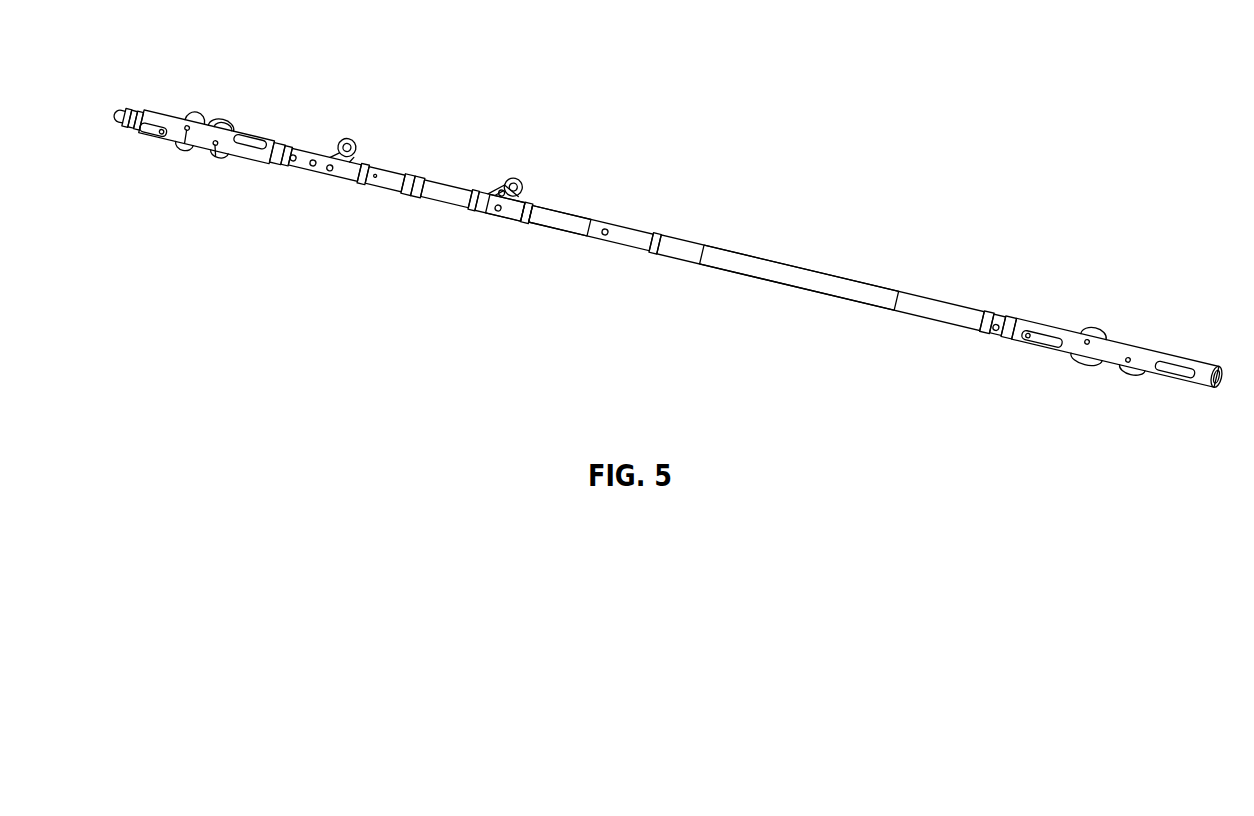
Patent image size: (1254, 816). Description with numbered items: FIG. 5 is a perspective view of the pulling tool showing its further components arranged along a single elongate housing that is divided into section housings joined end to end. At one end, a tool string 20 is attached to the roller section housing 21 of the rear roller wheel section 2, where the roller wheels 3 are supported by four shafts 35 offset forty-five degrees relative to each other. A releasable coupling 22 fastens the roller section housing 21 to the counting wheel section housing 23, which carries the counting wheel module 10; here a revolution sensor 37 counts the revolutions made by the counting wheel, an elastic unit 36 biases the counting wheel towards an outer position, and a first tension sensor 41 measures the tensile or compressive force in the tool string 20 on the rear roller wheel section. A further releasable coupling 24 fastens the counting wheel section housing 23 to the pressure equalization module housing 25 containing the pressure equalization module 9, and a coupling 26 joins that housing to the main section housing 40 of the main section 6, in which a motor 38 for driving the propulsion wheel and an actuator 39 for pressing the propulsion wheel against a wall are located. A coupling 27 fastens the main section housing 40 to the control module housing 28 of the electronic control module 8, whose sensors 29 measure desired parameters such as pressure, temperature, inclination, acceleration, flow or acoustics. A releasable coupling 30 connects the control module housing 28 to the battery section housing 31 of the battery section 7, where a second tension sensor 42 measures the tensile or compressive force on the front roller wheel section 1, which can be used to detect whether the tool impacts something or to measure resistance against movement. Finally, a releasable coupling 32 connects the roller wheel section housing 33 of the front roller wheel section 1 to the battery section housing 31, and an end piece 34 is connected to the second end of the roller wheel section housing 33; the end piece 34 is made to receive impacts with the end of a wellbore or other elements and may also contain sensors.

The first (front) roller wheel section 1 is at (1113, 350).
The second (rear) roller wheel section 2 is at (209, 122).
The roller wheels 3 is at (193, 116).
The main section 6 is at (482, 208).
The battery section 7 is at (827, 283).
The electronic control module 8 is at (630, 237).
The pressure equalization module 9 is at (380, 187).
The counting wheel module 10 is at (345, 173).
The tool string 20 is at (123, 128).
The roller section housing 21 is at (248, 133).
The releasable coupling 22 is at (278, 170).
The counting wheel section housing 23 is at (318, 152).
The releasable coupling 24 is at (370, 158).
The pressure equalization module housing 25 is at (392, 170).
The coupling 26 is at (407, 193).
The coupling 27 is at (527, 200).
The control module housing 28 is at (580, 238).
The sensors 29 is at (610, 222).
The releasable coupling 30 is at (658, 232).
The battery section housing 31 is at (760, 268).
The releasable coupling 32 is at (993, 318).
The roller wheel section housing 33 is at (1137, 373).
The end piece 34 is at (1218, 364).
The shafts 35 is at (212, 158).
The elastic unit 36 is at (313, 173).
The revolution sensor 37 is at (345, 143).
The motor 38 is at (502, 180).
The actuator 39 is at (497, 215).
The main section housing 40 is at (512, 212).
The first tension sensor 41 is at (289, 152).
The second tension sensor 42 is at (995, 337).